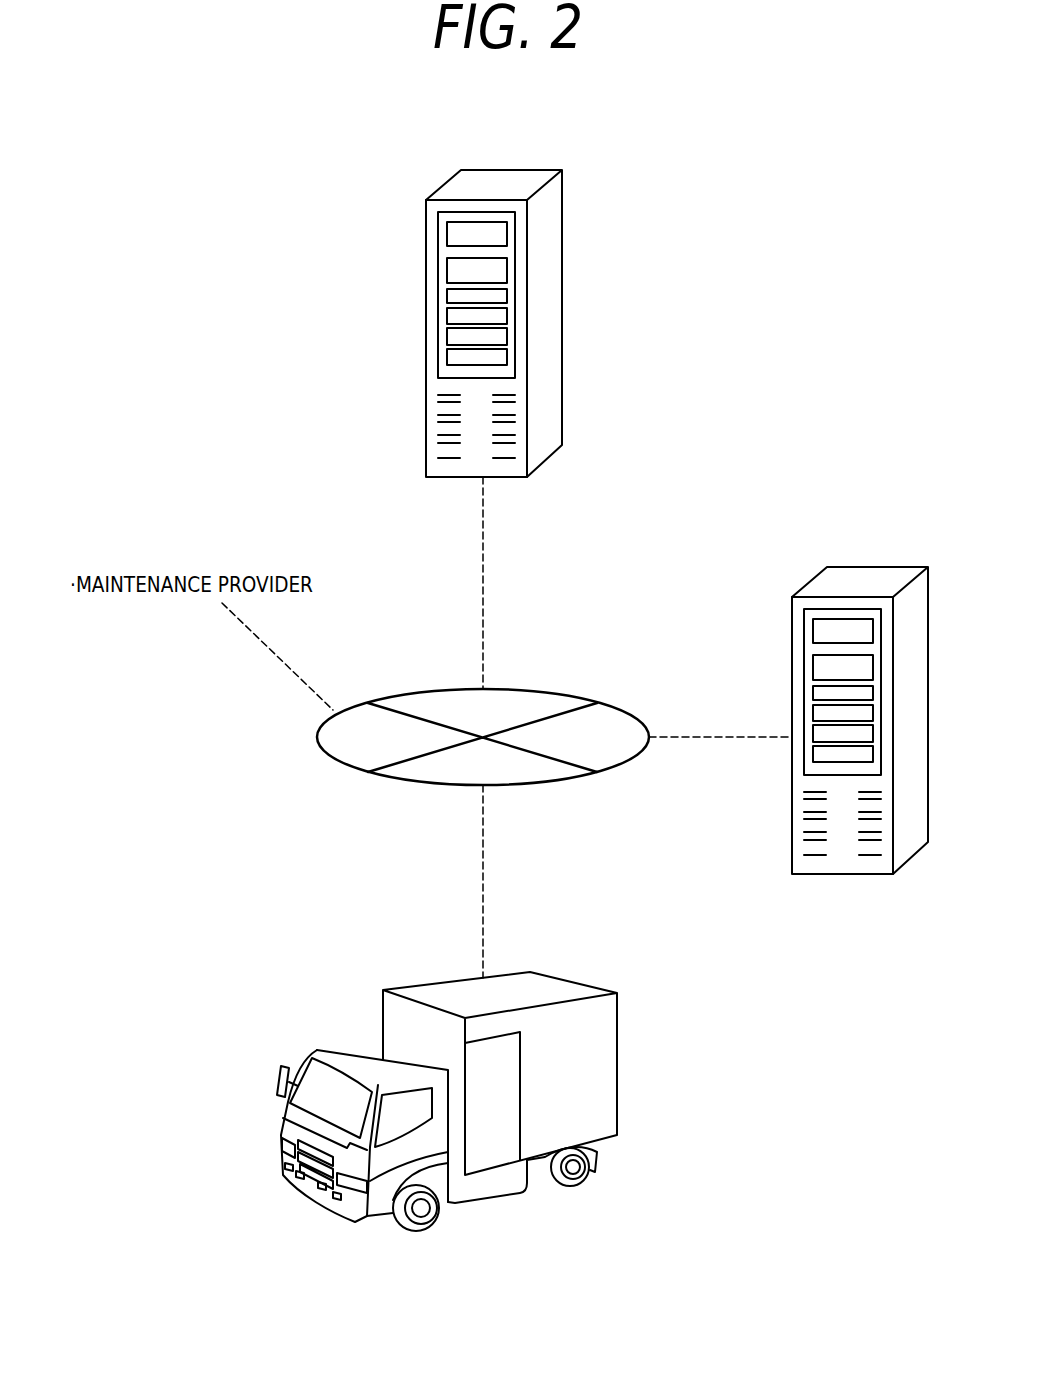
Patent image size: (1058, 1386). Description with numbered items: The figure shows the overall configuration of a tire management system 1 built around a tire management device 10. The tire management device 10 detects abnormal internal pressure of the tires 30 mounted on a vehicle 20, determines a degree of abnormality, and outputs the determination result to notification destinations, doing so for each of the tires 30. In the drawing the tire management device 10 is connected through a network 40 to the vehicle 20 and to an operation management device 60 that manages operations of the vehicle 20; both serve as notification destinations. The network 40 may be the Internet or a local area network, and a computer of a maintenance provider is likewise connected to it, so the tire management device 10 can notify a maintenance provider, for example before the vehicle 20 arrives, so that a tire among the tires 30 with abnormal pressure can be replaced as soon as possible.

The tire management system 1 is at (750, 288).
The tire management device 10 is at (502, 169).
The vehicle 20 is at (446, 985).
The tires 30 is at (435, 1229).
The network 40 is at (580, 696).
The operation management device 60 is at (866, 564).